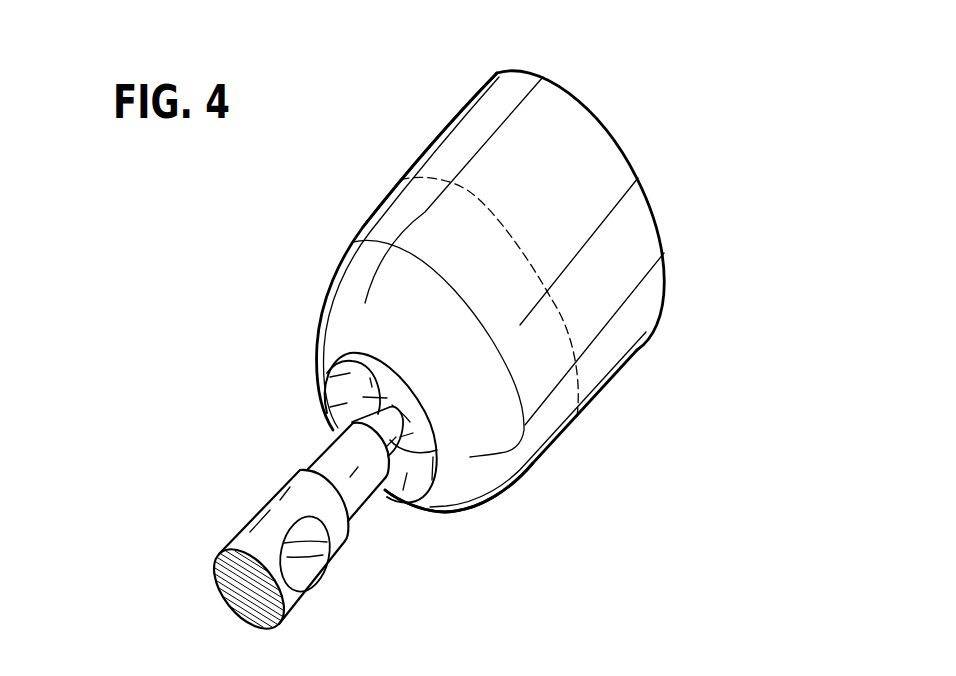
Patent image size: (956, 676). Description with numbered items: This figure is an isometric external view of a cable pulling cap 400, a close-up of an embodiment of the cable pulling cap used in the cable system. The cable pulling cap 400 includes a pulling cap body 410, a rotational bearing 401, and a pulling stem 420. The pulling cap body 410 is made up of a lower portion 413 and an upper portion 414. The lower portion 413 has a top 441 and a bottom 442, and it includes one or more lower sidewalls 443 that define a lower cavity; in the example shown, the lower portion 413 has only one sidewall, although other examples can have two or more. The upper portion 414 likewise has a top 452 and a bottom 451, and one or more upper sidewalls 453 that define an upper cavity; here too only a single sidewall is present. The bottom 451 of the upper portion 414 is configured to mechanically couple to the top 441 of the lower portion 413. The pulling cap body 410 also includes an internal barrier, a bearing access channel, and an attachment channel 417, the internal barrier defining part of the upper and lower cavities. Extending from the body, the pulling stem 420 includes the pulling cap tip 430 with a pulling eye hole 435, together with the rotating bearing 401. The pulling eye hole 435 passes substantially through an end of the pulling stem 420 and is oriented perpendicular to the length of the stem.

The cable pulling cap 400 is at (722, 107).
The pulling cap body 410 is at (608, 302).
The lower portion 413 is at (457, 111).
The upper portion 414 is at (350, 290).
The attachment channel 417 is at (636, 175).
The top 441 is at (417, 169).
The bottom 442 is at (572, 98).
The lower sidewall 443 is at (487, 123).
The bottom 451 is at (567, 427).
The top 452 is at (421, 514).
The upper sidewall 453 is at (370, 240).
The rotational bearing 401 is at (325, 368).
The pulling stem 420 is at (326, 448).
The pulling cap tip 430 is at (230, 583).
The pulling eye hole 435 is at (318, 573).